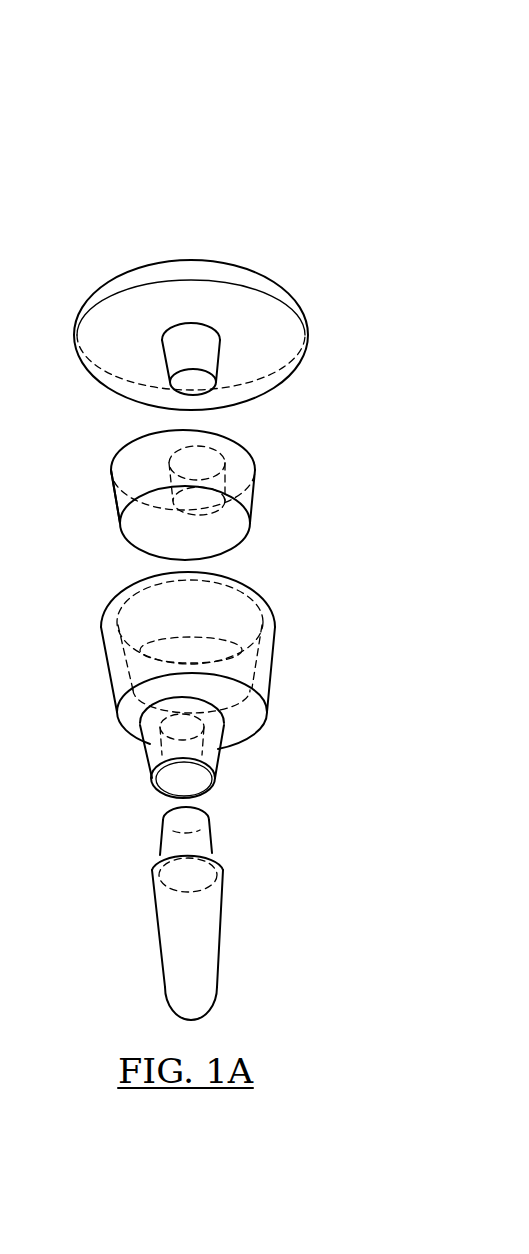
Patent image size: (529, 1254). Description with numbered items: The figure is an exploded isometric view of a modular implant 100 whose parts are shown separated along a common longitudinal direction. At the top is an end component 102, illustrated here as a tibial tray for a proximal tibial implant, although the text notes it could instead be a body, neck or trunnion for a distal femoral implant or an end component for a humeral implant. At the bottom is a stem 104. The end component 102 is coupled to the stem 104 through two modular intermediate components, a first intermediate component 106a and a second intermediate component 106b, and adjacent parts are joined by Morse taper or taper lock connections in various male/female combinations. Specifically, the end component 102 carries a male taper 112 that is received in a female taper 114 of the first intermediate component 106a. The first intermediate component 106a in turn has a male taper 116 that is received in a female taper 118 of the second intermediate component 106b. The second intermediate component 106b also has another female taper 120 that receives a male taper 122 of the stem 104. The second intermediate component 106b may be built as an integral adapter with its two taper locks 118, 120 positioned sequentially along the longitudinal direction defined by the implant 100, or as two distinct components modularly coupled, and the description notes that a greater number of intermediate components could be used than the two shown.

The modular implant 100 is at (43, 368).
The end component 102 is at (208, 226).
The stem 104 is at (205, 945).
The first intermediate component 106a is at (245, 477).
The second intermediate component 106b is at (263, 662).
The male taper 112 is at (212, 358).
The female taper 114 is at (173, 474).
The male taper 116 is at (117, 493).
The female taper 118 is at (103, 635).
The female taper 120 is at (160, 778).
The male taper 122 is at (205, 833).